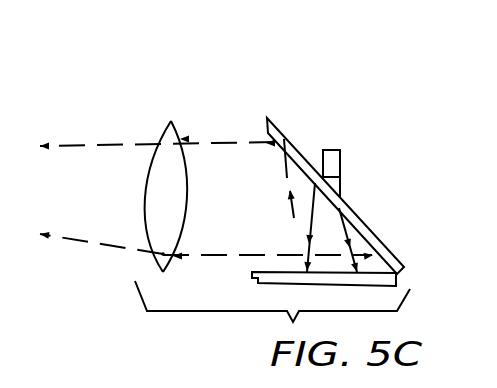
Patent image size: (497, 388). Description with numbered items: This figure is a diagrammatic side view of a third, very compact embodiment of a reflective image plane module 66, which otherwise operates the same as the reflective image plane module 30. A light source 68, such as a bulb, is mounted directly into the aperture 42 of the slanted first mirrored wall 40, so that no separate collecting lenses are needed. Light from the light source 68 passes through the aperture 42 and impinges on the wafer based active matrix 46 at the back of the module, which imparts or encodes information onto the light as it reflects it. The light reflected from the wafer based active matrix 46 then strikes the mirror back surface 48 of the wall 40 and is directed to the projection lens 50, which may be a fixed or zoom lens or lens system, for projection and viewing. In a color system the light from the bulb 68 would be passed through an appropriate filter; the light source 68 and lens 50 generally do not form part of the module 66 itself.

The reflective image plane module 30 is at (405, 276).
The first mirrored wall 40 is at (290, 139).
The aperture 42 is at (343, 193).
The wafer based active matrix 46 is at (252, 279).
The mirror back surface 48 is at (266, 139).
The projection lens 50 is at (146, 197).
The reflective image plane module 66 is at (203, 80).
The light source 68 is at (341, 160).